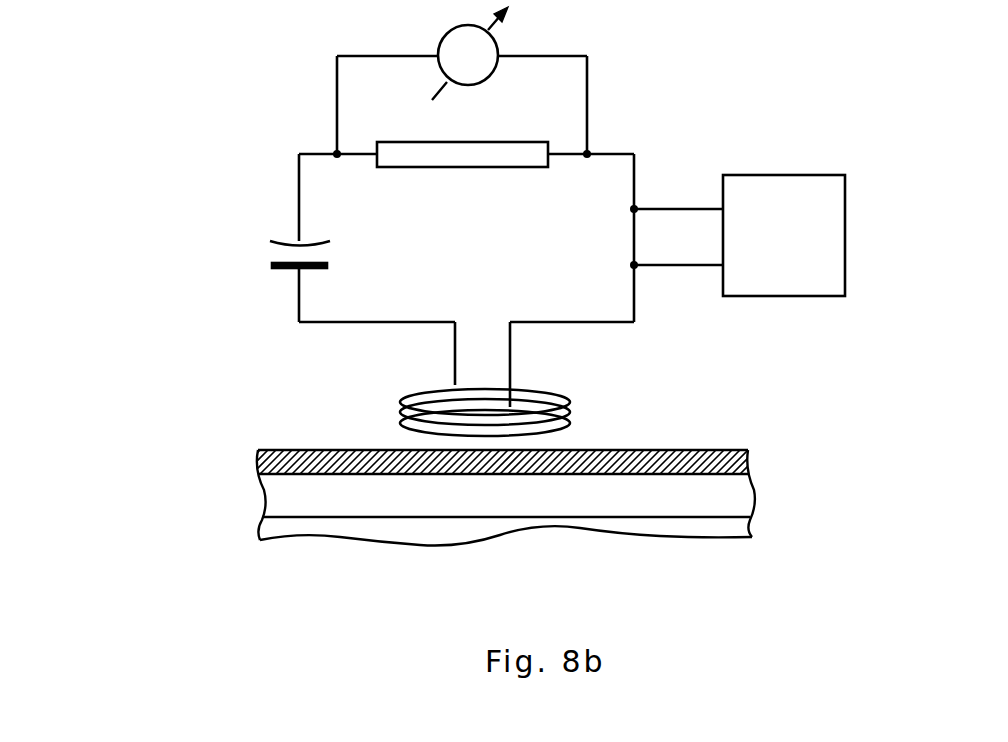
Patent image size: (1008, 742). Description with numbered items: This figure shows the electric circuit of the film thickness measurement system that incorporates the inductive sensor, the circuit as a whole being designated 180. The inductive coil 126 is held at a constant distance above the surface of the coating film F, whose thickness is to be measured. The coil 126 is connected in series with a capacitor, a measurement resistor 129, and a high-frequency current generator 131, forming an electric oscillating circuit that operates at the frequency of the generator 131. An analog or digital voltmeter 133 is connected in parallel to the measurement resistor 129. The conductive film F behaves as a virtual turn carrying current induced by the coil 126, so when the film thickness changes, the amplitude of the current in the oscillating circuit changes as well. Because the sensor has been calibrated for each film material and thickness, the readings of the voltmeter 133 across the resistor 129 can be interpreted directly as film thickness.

The voltmeter 133 is at (440, 40).
The measurement resistor 129 is at (527, 143).
The high-frequency current generator 131 is at (797, 174).
The inductive coil 126 is at (567, 412).
The coating film F is at (717, 448).
The measuring circuit 180 is at (275, 350).